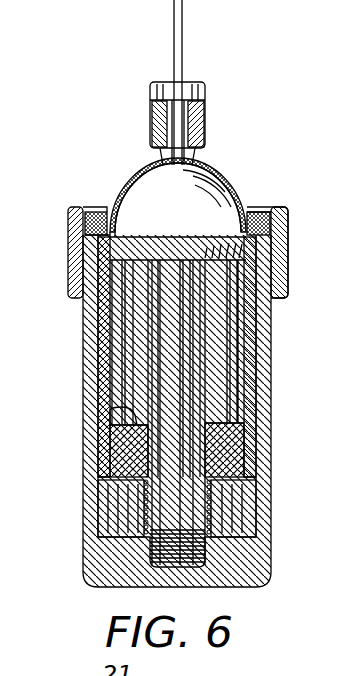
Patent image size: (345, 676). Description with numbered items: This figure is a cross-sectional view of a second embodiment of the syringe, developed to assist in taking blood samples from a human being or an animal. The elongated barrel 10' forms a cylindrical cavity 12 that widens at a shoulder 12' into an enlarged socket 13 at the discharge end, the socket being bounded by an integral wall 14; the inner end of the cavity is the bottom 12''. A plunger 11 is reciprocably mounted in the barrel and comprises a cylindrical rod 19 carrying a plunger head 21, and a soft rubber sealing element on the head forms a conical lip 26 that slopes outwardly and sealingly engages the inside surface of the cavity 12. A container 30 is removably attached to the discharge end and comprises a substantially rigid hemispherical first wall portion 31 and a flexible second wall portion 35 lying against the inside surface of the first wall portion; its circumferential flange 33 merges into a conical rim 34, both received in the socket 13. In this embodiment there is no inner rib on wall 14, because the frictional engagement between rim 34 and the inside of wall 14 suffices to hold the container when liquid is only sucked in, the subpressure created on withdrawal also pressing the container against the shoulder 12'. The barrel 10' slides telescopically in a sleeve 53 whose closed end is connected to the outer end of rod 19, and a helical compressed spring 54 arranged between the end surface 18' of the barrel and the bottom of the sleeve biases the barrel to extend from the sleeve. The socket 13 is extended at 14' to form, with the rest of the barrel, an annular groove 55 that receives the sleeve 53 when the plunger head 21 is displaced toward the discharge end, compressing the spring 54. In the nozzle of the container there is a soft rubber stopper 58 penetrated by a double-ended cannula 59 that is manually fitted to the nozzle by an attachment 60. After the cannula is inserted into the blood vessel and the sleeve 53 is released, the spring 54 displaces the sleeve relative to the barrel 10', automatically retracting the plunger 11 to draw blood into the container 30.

The double-ended cannula 59 is at (183, 18).
The attachment 60 is at (205, 96).
The stopper 58 is at (205, 120).
The container 30 is at (242, 173).
The first wall portion 31 is at (144, 164).
The plunger head 21 is at (132, 170).
The socket 13 is at (106, 210).
The second wall portion 35 is at (128, 185).
The circumferential flange 33 is at (97, 213).
The shoulder 12' is at (61, 223).
The conical rim 34 is at (263, 207).
The wall 14 is at (288, 241).
The socket extension 14' is at (307, 252).
The annular groove 55 is at (82, 302).
The cylindrical cavity 12 is at (178, 411).
The conical lip 26 is at (140, 253).
The bottom of cavity 12'' is at (82, 419).
The plunger 11 is at (210, 373).
The barrel 10' is at (212, 427).
The sleeve 53 is at (250, 450).
The helical compressed spring 54 is at (212, 503).
The rod 19 is at (178, 514).
The end surface 18' is at (145, 508).